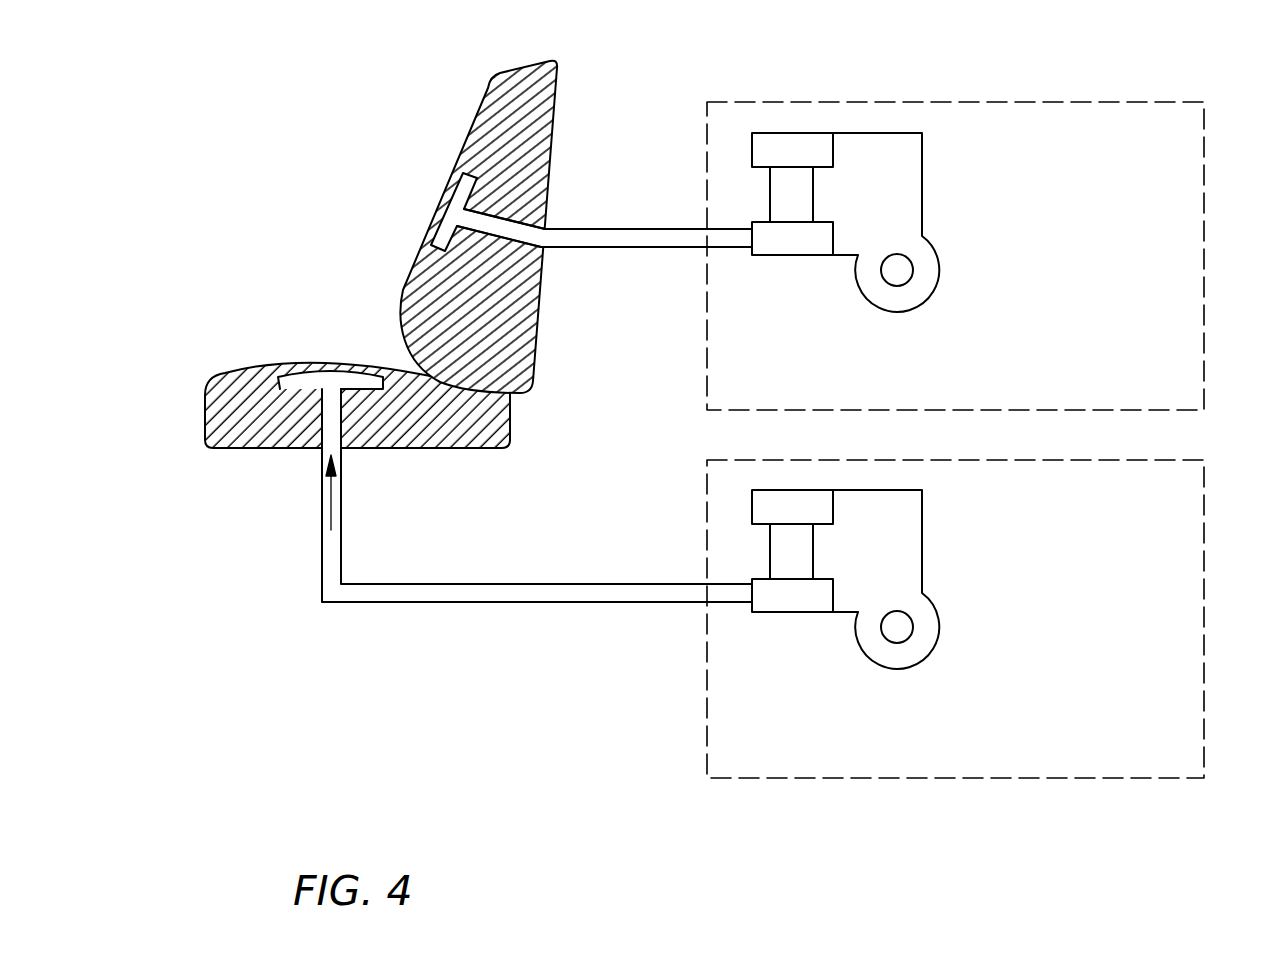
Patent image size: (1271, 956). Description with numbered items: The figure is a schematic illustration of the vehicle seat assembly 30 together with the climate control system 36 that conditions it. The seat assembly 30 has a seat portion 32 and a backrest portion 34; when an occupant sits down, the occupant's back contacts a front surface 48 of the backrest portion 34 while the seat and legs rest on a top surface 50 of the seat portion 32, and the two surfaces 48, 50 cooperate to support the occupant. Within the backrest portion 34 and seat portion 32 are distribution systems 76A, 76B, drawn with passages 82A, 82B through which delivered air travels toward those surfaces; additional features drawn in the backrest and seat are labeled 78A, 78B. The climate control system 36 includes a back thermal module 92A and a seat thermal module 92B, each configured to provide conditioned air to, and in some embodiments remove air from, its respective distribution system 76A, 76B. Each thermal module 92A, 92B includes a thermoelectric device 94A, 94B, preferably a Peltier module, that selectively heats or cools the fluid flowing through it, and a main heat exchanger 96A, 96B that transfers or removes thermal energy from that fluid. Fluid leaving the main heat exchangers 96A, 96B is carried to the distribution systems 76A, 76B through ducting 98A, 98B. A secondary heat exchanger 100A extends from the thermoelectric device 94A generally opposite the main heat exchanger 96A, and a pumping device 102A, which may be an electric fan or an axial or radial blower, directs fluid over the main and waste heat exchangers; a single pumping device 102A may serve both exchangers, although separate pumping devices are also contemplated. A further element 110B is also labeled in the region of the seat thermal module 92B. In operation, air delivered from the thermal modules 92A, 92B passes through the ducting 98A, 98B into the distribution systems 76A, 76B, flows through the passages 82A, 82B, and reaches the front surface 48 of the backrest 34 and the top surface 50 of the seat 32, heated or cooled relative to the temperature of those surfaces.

The seat assembly 30 is at (338, 238).
The seat portion 32 is at (280, 362).
The backrest portion 34 is at (480, 92).
The climate control system 36 is at (1150, 92).
The front surface 48 is at (480, 125).
The top surface 50 is at (240, 376).
The distribution system 76A is at (420, 200).
The distribution system 76B is at (320, 350).
The channel 78A is at (515, 207).
The channel 78B is at (310, 433).
The passage 82A is at (455, 200).
The passage 82B is at (336, 385).
The back thermal module 92A is at (943, 100).
The seat thermal module 92B is at (793, 778).
The thermoelectric device 94A is at (778, 192).
The thermoelectric device 94B is at (770, 540).
The main heat exchanger 96A is at (765, 243).
The main heat exchanger 96B is at (758, 610).
The ducting 98A is at (648, 247).
The ducting 98B is at (550, 585).
The secondary heat exchanger 100A is at (803, 133).
The pumping device 102A is at (923, 265).
The upper block 110B is at (803, 490).